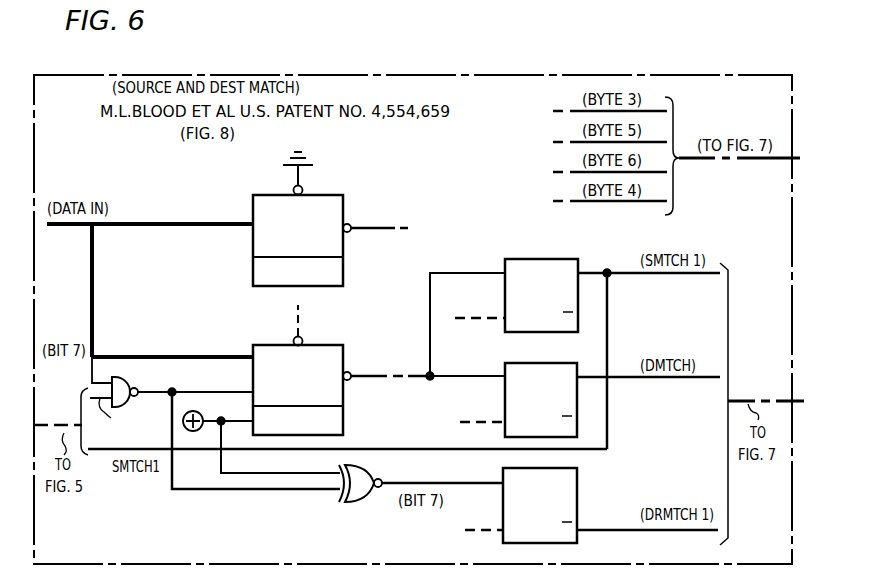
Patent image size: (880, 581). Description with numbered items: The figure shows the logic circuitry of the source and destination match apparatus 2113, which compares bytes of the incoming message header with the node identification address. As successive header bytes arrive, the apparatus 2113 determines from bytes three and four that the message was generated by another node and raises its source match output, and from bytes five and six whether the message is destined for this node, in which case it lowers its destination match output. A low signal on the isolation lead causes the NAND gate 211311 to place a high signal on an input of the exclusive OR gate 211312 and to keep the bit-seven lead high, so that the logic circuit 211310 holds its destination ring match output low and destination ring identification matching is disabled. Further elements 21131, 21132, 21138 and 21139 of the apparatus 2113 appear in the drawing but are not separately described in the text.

The source and destination match apparatus 2113 is at (648, 75).
The low byte match comparator 21131 is at (325, 195).
The high byte match comparator 21132 is at (325, 345).
The NAND gate 211311 is at (124, 377).
The exclusive OR gate 211312 is at (374, 475).
The flip-flop 21138 is at (545, 259).
The flip-flop 21139 is at (545, 363).
The logic circuit 211310 is at (579, 490).